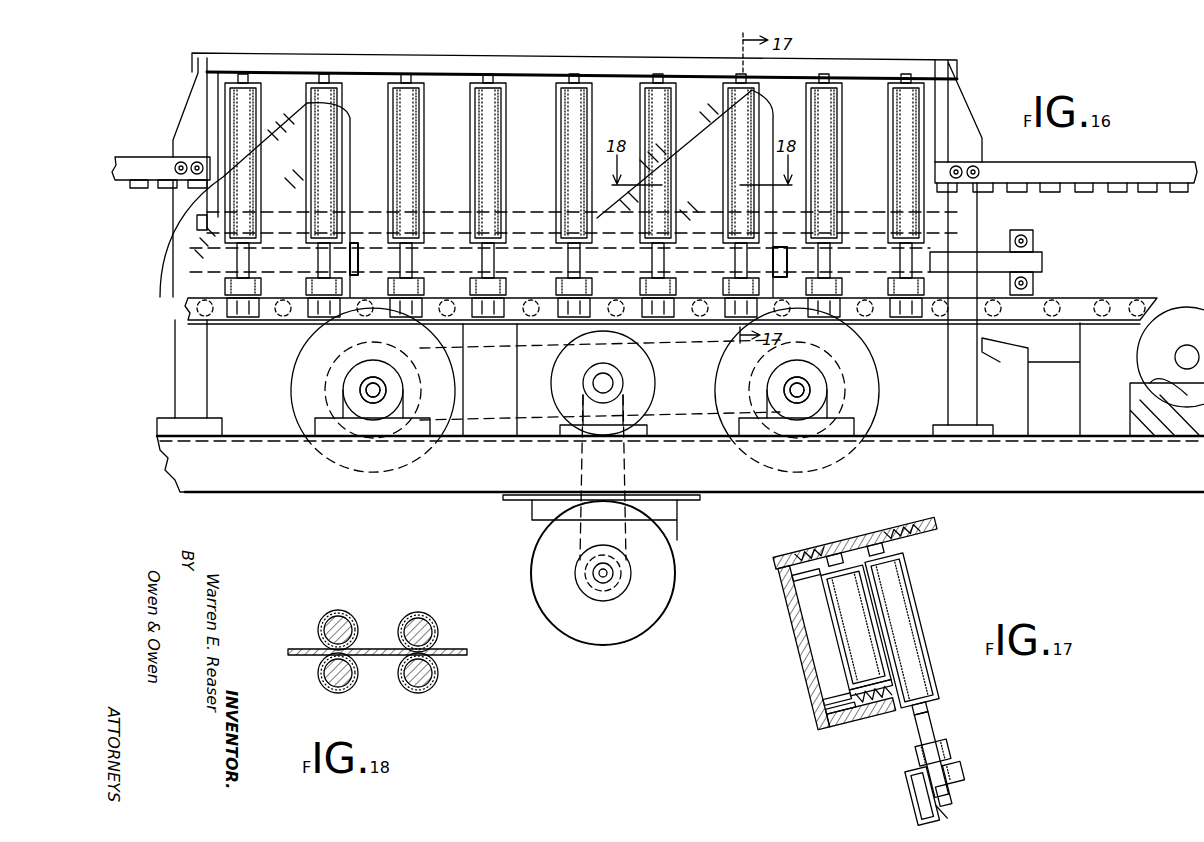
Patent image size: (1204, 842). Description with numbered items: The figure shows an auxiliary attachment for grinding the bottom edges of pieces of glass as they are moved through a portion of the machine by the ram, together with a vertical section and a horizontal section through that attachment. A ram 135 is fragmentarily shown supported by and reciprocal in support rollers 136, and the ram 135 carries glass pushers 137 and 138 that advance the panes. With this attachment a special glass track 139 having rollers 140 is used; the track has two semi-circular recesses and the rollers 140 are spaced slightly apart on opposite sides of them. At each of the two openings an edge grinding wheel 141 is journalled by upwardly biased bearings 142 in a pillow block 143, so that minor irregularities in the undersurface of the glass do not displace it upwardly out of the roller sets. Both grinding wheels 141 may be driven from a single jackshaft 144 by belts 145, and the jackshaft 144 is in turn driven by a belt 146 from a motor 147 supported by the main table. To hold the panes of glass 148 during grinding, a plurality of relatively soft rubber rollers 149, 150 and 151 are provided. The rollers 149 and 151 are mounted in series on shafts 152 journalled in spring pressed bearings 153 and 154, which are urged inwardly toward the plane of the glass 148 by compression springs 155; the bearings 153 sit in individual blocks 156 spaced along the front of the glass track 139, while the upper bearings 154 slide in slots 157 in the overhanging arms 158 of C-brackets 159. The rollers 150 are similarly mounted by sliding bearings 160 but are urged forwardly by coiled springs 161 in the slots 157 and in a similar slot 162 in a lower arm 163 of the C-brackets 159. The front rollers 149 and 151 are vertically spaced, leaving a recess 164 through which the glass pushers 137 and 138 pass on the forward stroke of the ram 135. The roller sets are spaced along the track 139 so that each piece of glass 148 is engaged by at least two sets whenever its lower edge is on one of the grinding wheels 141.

In FIG. 16, the ram 135 is at (1042, 262).
In FIG. 16, the support rollers 136 is at (1033, 238).
In FIG. 16, the glass pusher 137 is at (787, 262).
In FIG. 16, the glass pusher 138 is at (358, 260).
In FIG. 16, the glass track 139 is at (920, 325).
In FIG. 17, the glass track 139 is at (941, 812).
In FIG. 16, the rollers 140 is at (276, 303).
In FIG. 16, the edge grinding wheel 141 is at (292, 372).
In FIG. 17, the edge grinding wheel 141 is at (922, 796).
In FIG. 16, the upwardly biased bearings 142 is at (342, 385).
In FIG. 16, the pillow block 143 is at (337, 408).
In FIG. 16, the jackshaft 144 is at (560, 423).
In FIG. 16, the belts 145 is at (523, 372).
In FIG. 16, the belt 146 is at (683, 509).
In FIG. 16, the motor 147 is at (680, 572).
In FIG. 16, the panes of glass 148 is at (353, 130).
In FIG. 18, the panes of glass 148 is at (465, 650).
In FIG. 16, the rubber rollers 149 is at (887, 165).
In FIG. 17, the rubber rollers 149 is at (902, 630).
In FIG. 18, the rubber rollers 149 is at (355, 688).
In FIG. 17, the rubber rollers 150 is at (856, 627).
In FIG. 18, the rubber rollers 150 is at (352, 617).
In FIG. 16, the rubber rollers 151 is at (888, 287).
In FIG. 17, the rubber rollers 151 is at (933, 752).
In FIG. 17, the shafts 152 is at (931, 755).
In FIG. 17, the spring pressed bearings 153 is at (943, 795).
In FIG. 17, the spring pressed bearings 154 is at (851, 529).
In FIG. 17, the compression springs 155 is at (857, 542).
In FIG. 17, the blocks 156 is at (953, 772).
In FIG. 17, the slots 157 is at (834, 559).
In FIG. 16, the overhanging arms 158 is at (680, 54).
In FIG. 17, the overhanging arms 158 is at (875, 549).
In FIG. 17, the C-brackets 159 is at (776, 655).
In FIG. 17, the sliding bearings 160 is at (861, 712).
In FIG. 17, the coiled springs 161 is at (822, 637).
In FIG. 17, the slot 162 is at (871, 692).
In FIG. 17, the lower arm 163 is at (840, 708).
In FIG. 17, the recess 164 is at (920, 708).